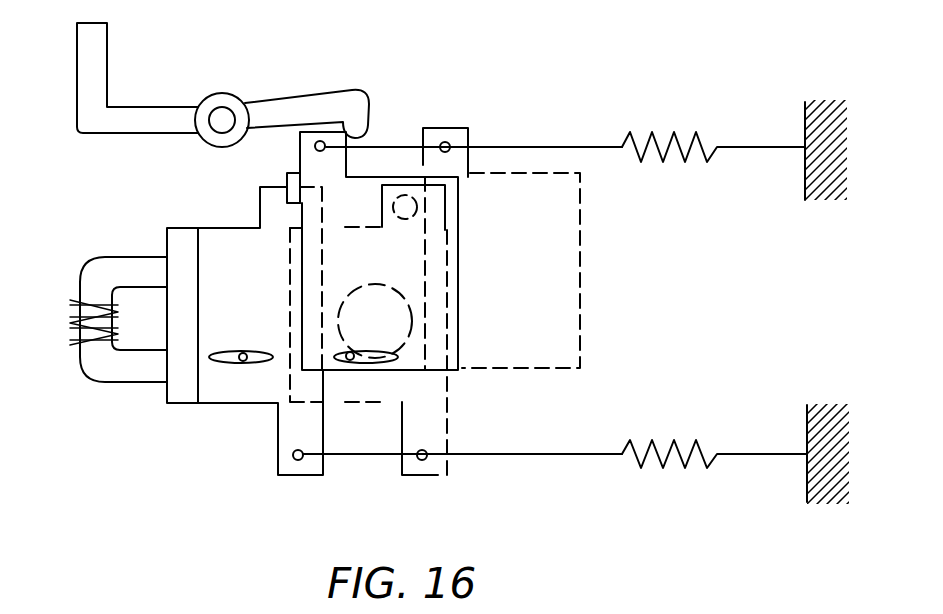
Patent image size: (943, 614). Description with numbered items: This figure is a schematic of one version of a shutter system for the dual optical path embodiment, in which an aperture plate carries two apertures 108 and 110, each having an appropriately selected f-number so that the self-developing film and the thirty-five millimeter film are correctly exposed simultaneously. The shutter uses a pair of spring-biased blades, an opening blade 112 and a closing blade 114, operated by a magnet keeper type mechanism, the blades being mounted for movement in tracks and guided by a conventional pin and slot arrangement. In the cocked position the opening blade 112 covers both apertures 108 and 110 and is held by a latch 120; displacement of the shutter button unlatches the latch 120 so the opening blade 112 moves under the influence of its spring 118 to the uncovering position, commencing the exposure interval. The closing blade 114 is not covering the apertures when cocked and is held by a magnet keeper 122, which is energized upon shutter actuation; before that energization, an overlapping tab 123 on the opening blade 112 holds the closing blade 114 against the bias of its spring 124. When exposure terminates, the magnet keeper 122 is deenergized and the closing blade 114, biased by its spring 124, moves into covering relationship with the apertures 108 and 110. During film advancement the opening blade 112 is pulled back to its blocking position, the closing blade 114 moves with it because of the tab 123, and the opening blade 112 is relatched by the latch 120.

The aperture 108 is at (386, 312).
The aperture 110 is at (409, 207).
The opening blade 112 is at (412, 363).
The closing blade 114 is at (232, 381).
The spring 118 is at (657, 131).
The latch 120 is at (295, 102).
The magnet keeper 122 is at (81, 365).
The overlapping tab 123 is at (287, 176).
The spring 124 is at (660, 441).